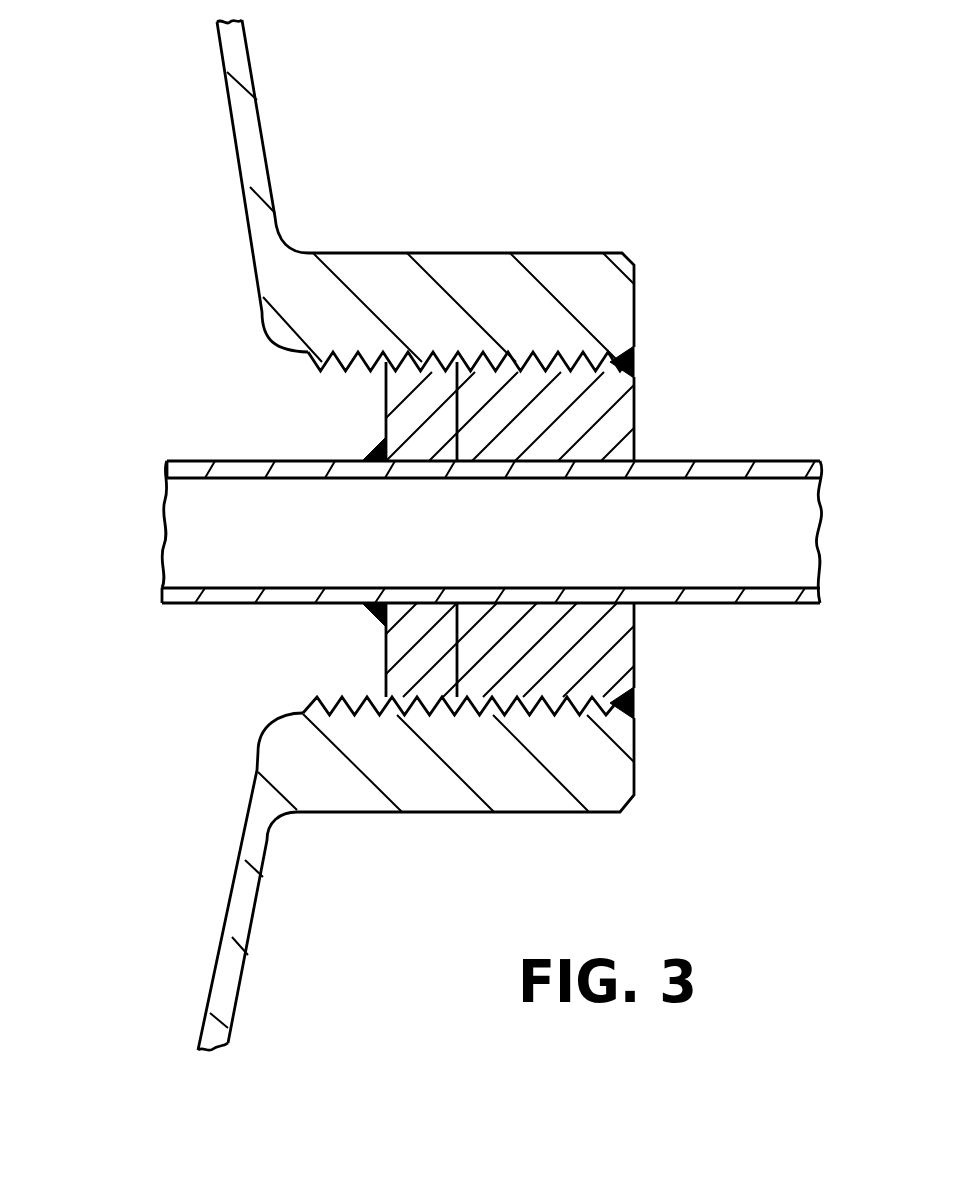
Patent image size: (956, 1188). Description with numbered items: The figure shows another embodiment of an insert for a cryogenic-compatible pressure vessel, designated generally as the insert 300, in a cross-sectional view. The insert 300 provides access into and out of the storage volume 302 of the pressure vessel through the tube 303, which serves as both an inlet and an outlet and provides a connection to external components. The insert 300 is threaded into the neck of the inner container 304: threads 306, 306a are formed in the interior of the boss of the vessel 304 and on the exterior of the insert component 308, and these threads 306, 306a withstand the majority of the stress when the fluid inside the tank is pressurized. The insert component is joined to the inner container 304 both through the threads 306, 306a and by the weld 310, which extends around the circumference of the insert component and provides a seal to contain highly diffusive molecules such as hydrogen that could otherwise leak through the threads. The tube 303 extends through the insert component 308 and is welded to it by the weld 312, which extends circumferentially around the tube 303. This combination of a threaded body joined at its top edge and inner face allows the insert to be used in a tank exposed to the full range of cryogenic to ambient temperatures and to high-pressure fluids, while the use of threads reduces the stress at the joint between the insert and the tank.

The insert 300 is at (597, 168).
The storage volume 302 is at (130, 360).
The tube 303 is at (730, 462).
The inner container 304 is at (267, 152).
The threads 306 is at (443, 352).
The threads 306a is at (473, 454).
The insert component 308 is at (386, 416).
The weld 310 is at (638, 360).
The weld 312 is at (380, 622).